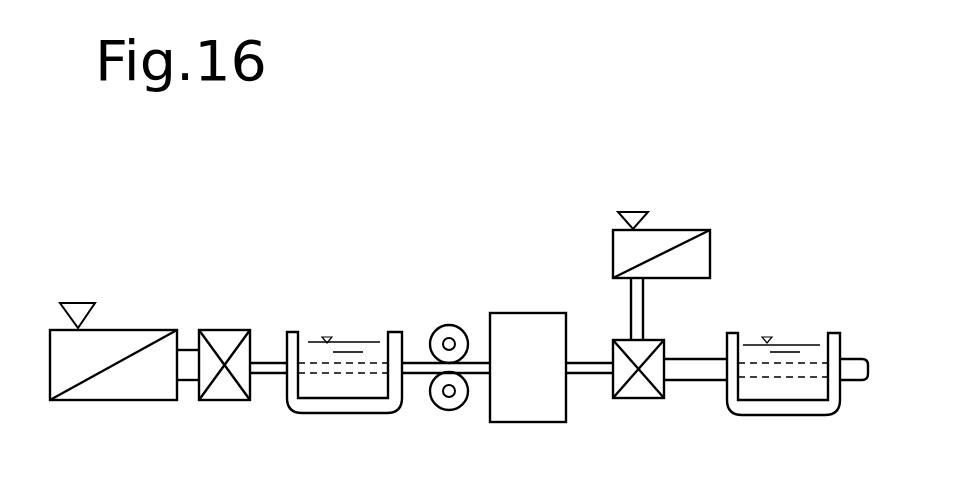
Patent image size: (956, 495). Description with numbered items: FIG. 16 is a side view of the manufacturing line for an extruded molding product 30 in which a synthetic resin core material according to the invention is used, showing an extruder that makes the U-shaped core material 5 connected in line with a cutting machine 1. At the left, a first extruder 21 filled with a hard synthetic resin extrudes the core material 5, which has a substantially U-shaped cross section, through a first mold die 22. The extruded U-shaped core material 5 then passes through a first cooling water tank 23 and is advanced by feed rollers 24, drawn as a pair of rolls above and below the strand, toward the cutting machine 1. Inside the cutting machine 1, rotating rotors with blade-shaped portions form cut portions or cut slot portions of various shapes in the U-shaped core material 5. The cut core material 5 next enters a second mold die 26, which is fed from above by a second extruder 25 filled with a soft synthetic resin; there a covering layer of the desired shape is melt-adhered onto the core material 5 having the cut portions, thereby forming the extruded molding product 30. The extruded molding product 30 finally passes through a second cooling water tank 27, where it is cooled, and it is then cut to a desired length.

The cutting machine 1 is at (524, 330).
The core material 5 is at (267, 363).
The first extruder 21 is at (132, 342).
The first mold die 22 is at (225, 392).
The first cooling water tank 23 is at (350, 342).
The feed rollers 24 is at (452, 404).
The second extruder 25 is at (672, 240).
The second mold die 26 is at (643, 387).
The second cooling water tank 27 is at (808, 352).
The extruded molding product 30 is at (702, 378).